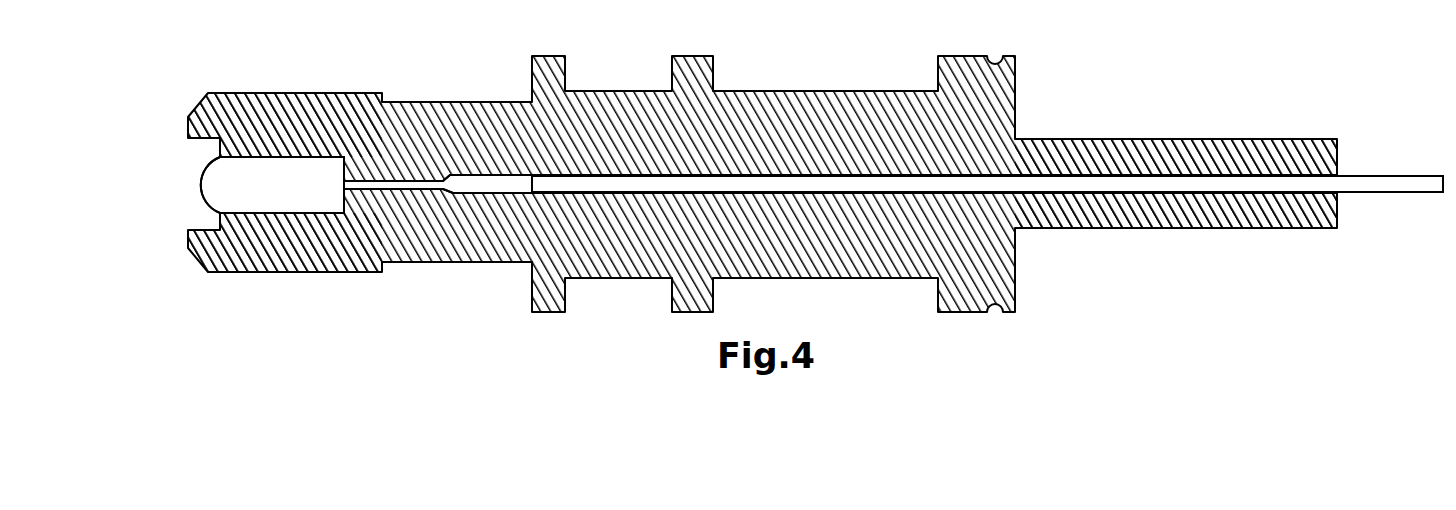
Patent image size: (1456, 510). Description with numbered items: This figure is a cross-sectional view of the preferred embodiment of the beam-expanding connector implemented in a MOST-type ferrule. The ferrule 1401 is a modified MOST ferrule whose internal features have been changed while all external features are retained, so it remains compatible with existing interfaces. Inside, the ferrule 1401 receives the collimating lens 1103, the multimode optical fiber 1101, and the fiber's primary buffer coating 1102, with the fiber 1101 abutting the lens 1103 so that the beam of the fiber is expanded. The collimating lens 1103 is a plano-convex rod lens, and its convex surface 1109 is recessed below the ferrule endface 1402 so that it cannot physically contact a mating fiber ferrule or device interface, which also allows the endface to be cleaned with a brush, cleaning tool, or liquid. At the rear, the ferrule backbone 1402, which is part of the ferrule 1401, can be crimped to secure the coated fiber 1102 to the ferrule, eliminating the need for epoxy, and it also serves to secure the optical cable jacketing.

The multimode optical fiber 1101 is at (468, 185).
The primary buffer coating 1102 is at (1358, 183).
The collimating lens 1103 is at (275, 167).
The convex surface of C-lens 1109 is at (202, 186).
The ferrule 1401 is at (785, 110).
The ferrule backbone 1402 is at (188, 128).